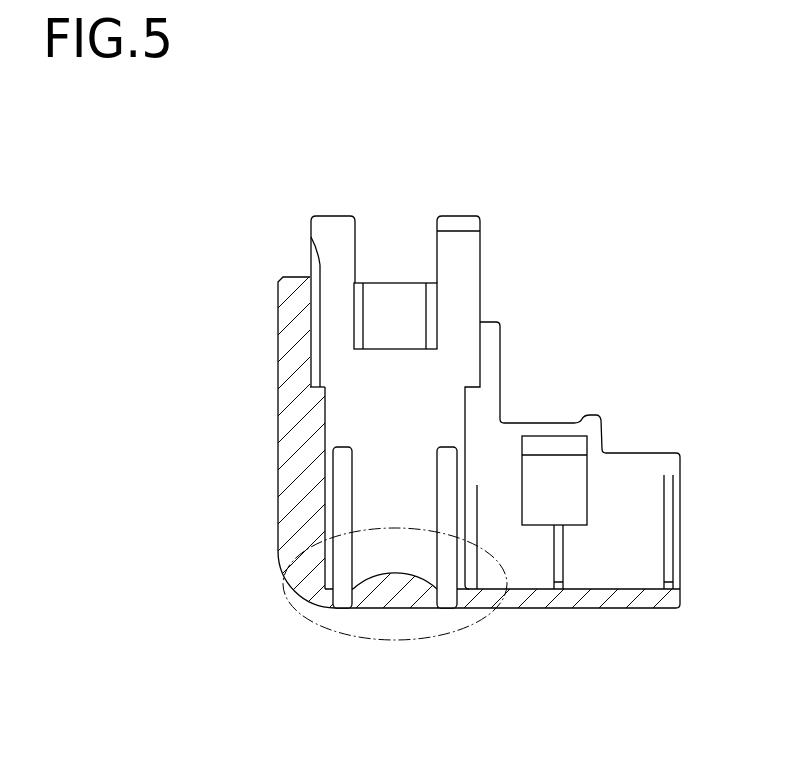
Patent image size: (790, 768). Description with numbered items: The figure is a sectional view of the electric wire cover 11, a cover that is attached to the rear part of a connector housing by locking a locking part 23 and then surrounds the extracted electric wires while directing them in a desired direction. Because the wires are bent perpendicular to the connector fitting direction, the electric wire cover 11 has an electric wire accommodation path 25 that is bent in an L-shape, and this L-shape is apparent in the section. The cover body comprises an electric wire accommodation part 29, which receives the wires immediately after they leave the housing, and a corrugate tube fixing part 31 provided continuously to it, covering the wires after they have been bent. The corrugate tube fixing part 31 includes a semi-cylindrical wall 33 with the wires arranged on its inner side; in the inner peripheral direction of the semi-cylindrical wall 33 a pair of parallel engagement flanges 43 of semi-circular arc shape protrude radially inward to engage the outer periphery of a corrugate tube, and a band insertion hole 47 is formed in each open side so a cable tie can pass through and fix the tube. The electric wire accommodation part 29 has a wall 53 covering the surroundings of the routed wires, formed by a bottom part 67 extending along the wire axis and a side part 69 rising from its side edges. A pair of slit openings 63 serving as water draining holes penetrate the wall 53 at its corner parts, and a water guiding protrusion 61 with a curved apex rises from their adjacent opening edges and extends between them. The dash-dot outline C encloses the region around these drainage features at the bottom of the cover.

The electric wire cover 11 is at (395, 448).
The locking part 23 is at (355, 238).
The electric wire accommodation path 25 is at (342, 376).
The electric wire accommodation part 29 is at (272, 507).
The corrugate tube fixing part 31 is at (664, 614).
The semi-cylindrical wall 33 is at (557, 421).
The engagement flanges 43 is at (651, 492).
The band insertion hole 47 is at (568, 452).
The wall 53 is at (401, 614).
The water guiding protrusion 61 is at (400, 568).
The slit openings 63 is at (447, 466).
The bottom part 67 is at (354, 611).
The side part 69 is at (368, 517).
The region C is at (290, 614).